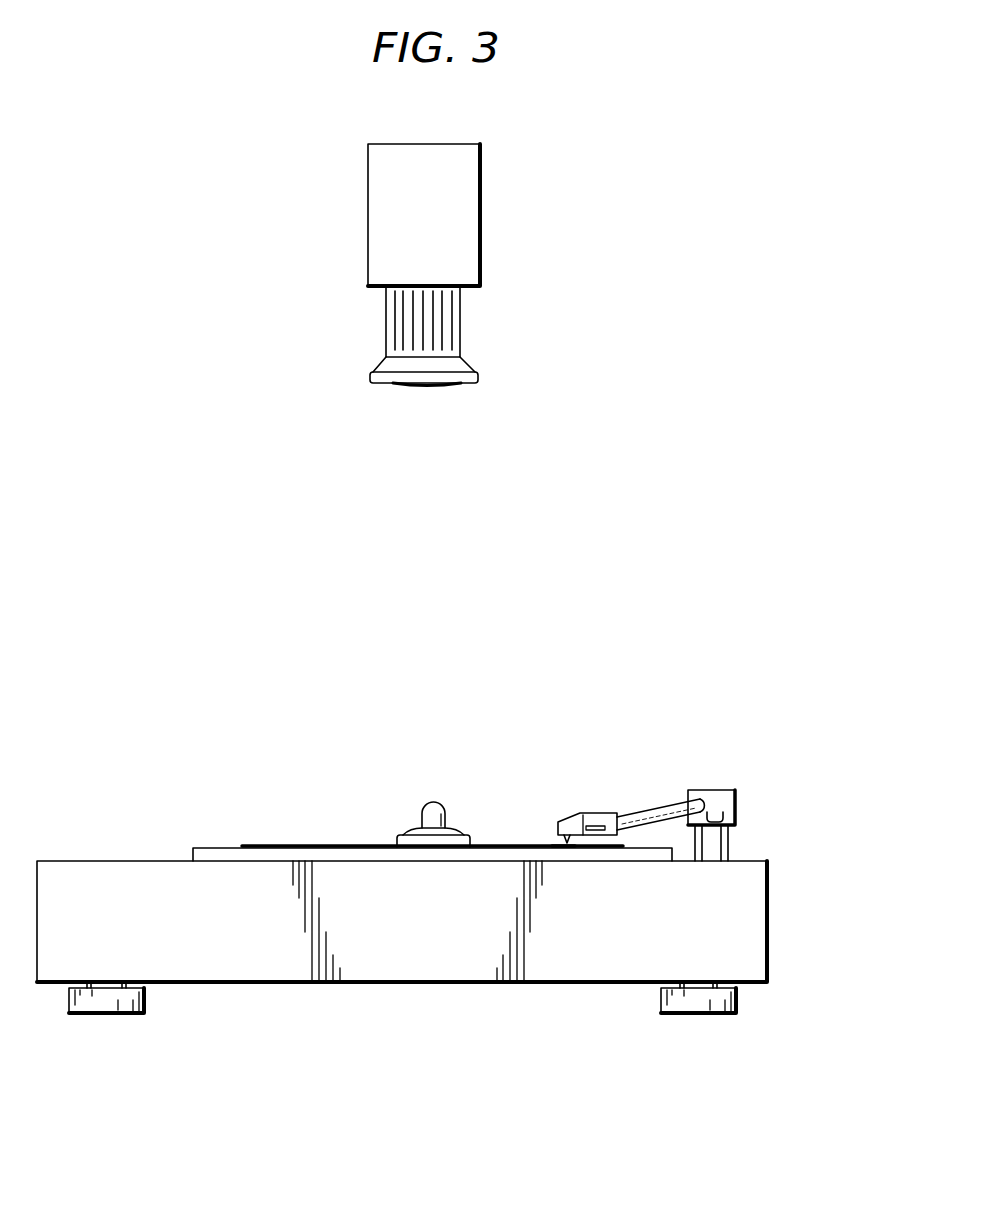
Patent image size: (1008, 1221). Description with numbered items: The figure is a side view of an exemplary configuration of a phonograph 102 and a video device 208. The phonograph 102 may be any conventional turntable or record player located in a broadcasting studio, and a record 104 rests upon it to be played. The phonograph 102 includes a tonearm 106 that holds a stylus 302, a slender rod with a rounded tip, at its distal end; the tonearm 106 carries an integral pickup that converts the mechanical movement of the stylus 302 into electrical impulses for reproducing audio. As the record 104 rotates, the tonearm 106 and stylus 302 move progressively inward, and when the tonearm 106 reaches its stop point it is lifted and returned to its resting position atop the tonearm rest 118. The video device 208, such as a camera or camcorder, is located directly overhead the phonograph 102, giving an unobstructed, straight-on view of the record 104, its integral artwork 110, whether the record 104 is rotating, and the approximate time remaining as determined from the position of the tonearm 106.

The phonograph 102 is at (767, 956).
The record 104 is at (257, 847).
The tonearm 106 is at (662, 800).
The integral artwork 110 is at (353, 847).
The tonearm rest 118 is at (737, 847).
The video device 208 is at (480, 199).
The stylus 302 is at (562, 843).